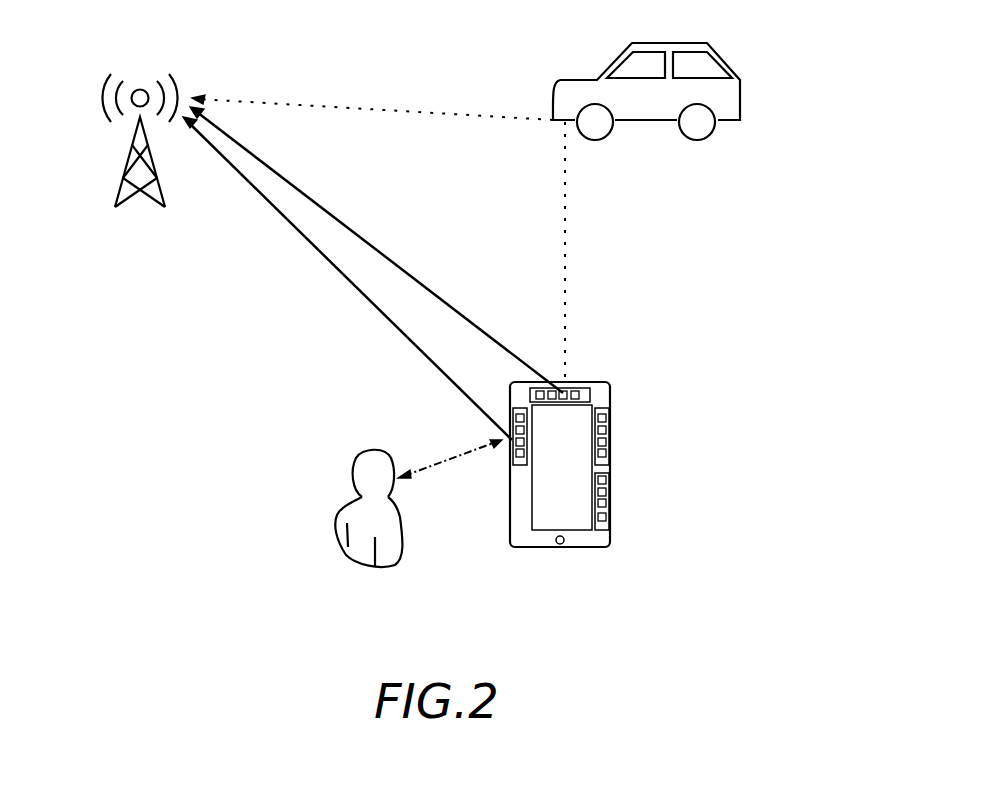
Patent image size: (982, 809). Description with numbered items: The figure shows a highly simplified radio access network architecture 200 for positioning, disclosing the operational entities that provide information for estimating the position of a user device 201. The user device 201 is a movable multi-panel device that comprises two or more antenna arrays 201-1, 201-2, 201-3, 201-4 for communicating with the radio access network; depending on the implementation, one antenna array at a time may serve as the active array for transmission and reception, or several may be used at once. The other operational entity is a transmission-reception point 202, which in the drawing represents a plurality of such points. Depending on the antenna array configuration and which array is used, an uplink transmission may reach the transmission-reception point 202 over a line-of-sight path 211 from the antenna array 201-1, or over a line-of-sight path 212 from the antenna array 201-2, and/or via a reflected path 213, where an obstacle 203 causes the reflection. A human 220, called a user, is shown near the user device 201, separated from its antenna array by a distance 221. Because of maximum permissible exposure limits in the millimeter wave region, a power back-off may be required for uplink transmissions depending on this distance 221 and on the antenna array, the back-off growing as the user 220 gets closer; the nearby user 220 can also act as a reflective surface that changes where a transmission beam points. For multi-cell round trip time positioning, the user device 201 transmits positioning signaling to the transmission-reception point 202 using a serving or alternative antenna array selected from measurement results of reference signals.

The radio access network architecture 200 is at (372, 68).
The user device 201 is at (575, 490).
The antenna array 201-1 is at (510, 472).
The antenna array 201-2 is at (590, 390).
The antenna array 201-3 is at (608, 455).
The antenna array 201-4 is at (608, 520).
The transmission-reception point 202 is at (165, 207).
The obstacle 203 is at (740, 120).
The line-of-sight path 211 is at (348, 285).
The line-of-sight path 212 is at (357, 225).
The reflected path 213 is at (565, 257).
The human 220 is at (336, 525).
The distance 221 is at (423, 462).